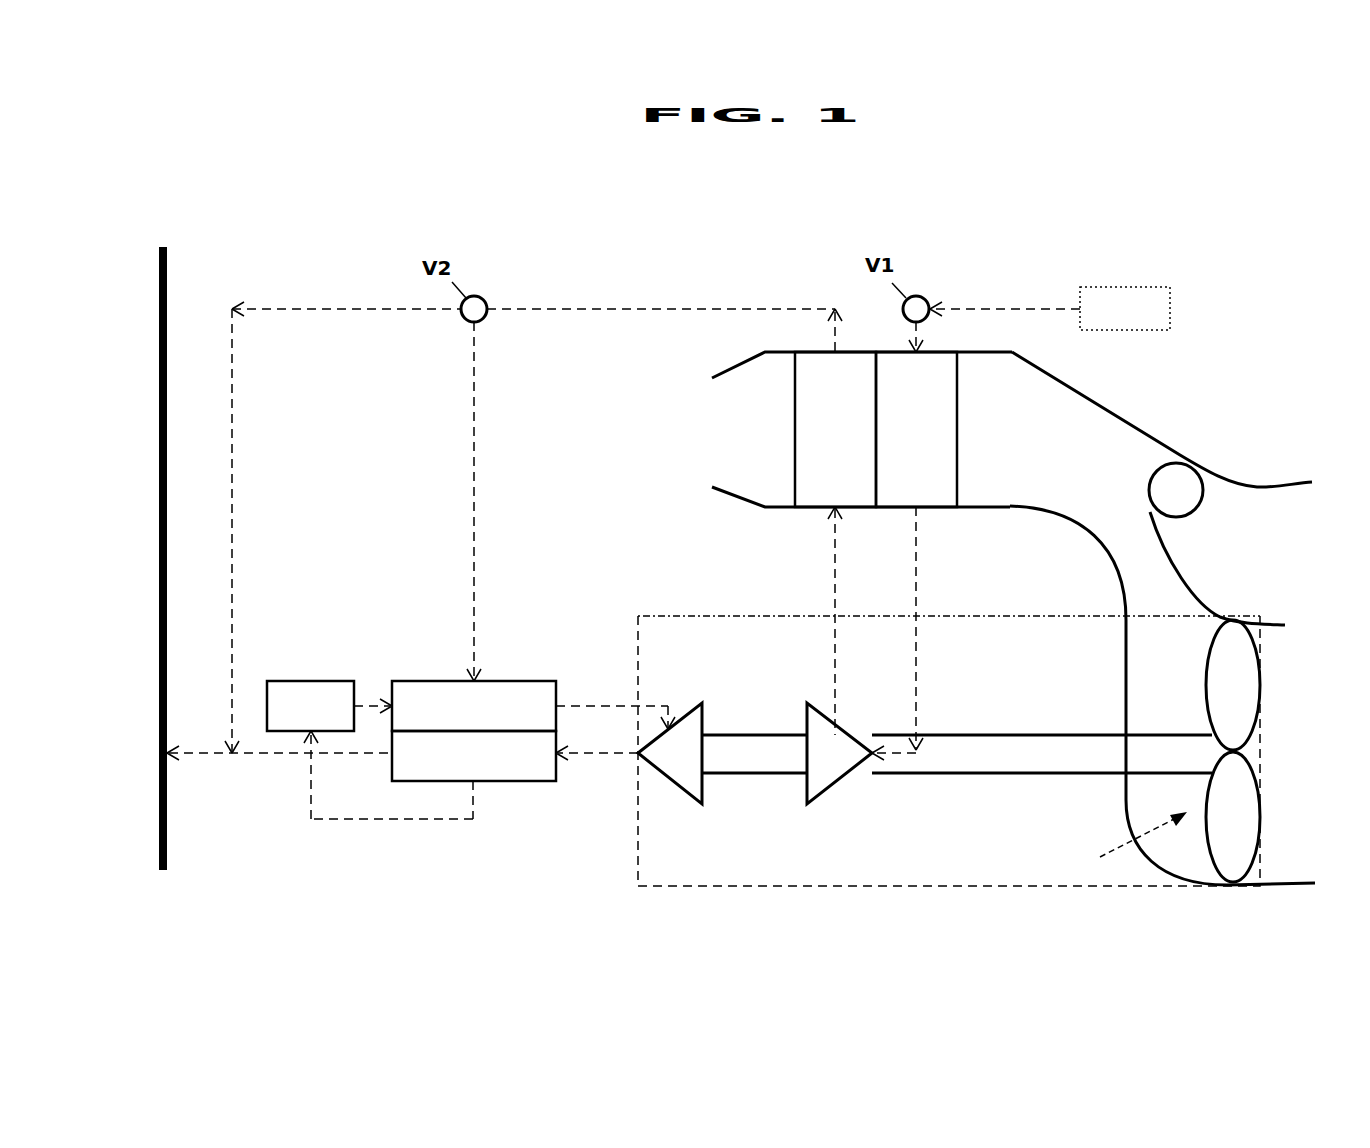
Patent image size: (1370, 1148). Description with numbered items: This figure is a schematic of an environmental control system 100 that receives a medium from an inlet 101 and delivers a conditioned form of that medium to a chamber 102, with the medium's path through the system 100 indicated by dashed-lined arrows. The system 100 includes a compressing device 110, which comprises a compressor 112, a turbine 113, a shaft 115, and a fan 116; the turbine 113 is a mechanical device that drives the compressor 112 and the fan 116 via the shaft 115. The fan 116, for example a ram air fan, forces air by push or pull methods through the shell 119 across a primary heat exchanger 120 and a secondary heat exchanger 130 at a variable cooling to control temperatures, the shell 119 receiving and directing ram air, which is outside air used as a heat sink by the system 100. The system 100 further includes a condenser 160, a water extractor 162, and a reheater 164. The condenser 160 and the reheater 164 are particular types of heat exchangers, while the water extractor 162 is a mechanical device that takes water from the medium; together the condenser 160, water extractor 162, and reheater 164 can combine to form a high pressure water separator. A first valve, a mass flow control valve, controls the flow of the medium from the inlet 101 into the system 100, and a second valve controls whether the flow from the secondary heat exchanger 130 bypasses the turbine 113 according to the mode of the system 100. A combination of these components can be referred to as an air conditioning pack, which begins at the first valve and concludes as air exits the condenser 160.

The system 100 is at (1253, 170).
The inlet 101 is at (1050, 308).
The chamber 102 is at (158, 247).
The compressing device 110 is at (743, 886).
The compressor 112 is at (839, 753).
The turbine 113 is at (670, 753).
The shaft 115 is at (1062, 775).
The fan 116 is at (1125, 848).
The shell 119 is at (1176, 458).
The primary heat exchanger 120 is at (916, 429).
The secondary heat exchanger 130 is at (835, 429).
The condenser 160 is at (474, 756).
The water extractor 162 is at (310, 706).
The reheater 164 is at (474, 706).